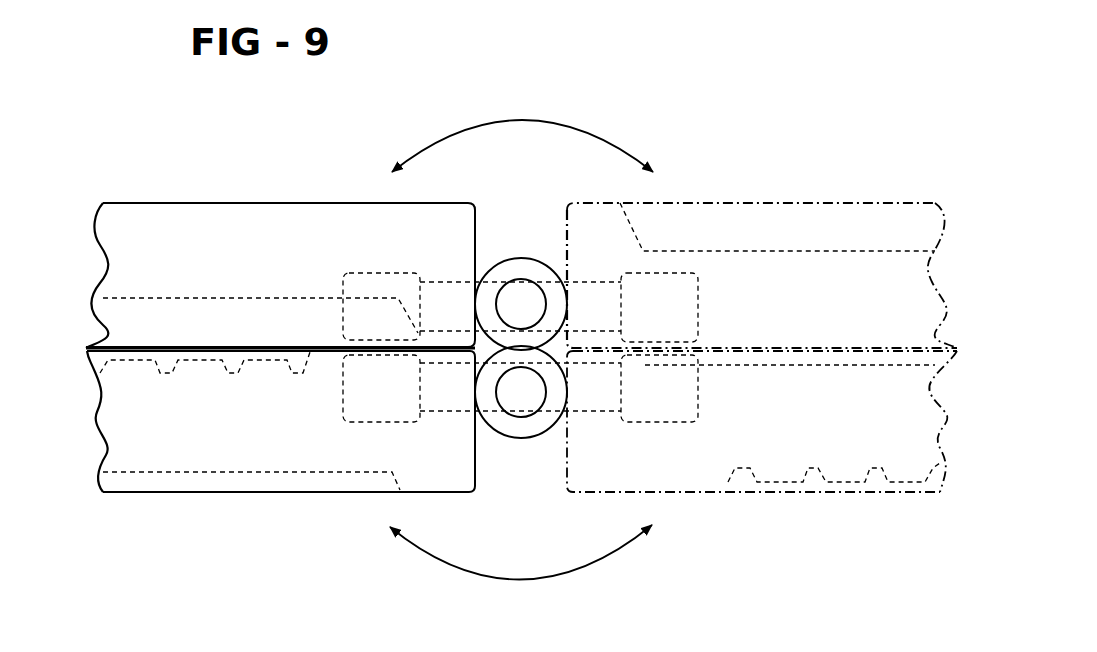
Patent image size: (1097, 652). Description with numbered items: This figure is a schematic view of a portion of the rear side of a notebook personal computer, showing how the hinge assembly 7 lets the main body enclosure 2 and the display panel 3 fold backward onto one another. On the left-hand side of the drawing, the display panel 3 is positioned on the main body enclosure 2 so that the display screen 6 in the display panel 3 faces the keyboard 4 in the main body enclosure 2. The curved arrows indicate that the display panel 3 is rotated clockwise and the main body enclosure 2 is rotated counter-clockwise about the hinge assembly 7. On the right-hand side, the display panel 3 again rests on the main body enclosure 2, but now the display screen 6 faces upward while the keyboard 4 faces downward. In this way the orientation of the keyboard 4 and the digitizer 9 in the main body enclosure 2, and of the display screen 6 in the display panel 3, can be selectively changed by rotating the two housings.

The main body enclosure 2 is at (220, 423).
The display panel 3 is at (172, 245).
The keyboard 4 is at (197, 358).
The display screen 6 is at (281, 297).
The hinge assembly 7 is at (510, 435).
The digitizer 9 is at (252, 472).